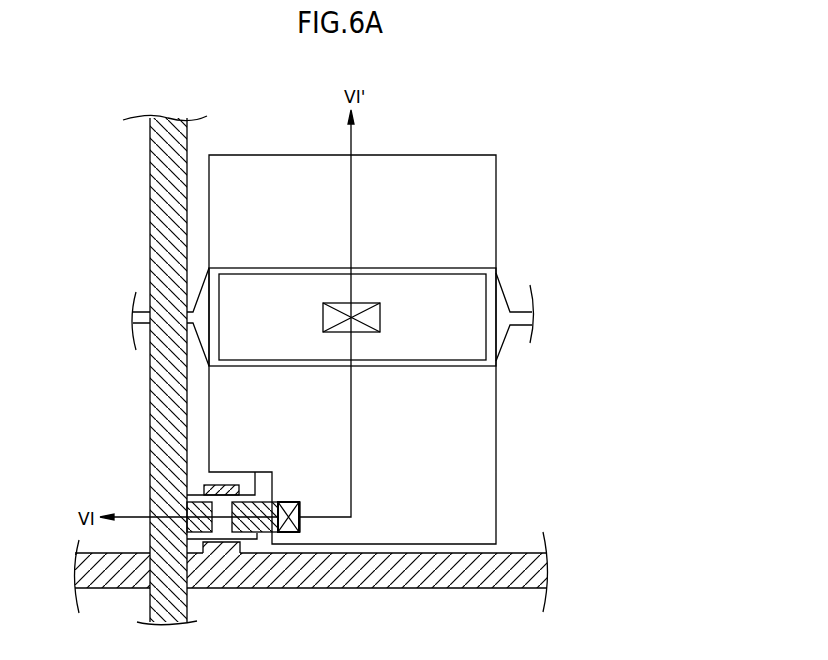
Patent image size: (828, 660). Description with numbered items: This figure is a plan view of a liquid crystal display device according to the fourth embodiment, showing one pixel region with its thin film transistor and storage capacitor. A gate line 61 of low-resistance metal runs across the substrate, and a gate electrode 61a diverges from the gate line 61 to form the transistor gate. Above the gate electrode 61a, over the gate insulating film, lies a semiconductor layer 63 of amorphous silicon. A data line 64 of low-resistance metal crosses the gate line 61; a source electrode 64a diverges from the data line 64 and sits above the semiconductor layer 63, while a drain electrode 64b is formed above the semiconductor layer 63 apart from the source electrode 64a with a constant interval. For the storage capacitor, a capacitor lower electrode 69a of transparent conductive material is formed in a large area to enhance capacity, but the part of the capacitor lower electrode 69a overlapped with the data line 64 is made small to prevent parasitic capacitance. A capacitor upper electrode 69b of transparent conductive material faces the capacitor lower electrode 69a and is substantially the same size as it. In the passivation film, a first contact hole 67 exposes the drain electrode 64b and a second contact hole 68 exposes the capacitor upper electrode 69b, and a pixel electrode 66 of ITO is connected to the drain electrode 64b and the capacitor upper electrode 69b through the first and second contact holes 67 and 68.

The gate line 61 is at (452, 580).
The gate electrode 61a is at (222, 553).
The semiconductor layer 63 is at (222, 493).
The data line 64 is at (166, 423).
The source electrode 64a is at (200, 510).
The drain electrode 64b is at (265, 532).
The pixel electrode 66 is at (489, 448).
The first contact hole 67 is at (290, 532).
The second contact hole 68 is at (367, 302).
The capacitor lower electrode 69a is at (498, 272).
The capacitor upper electrode 69b is at (285, 272).